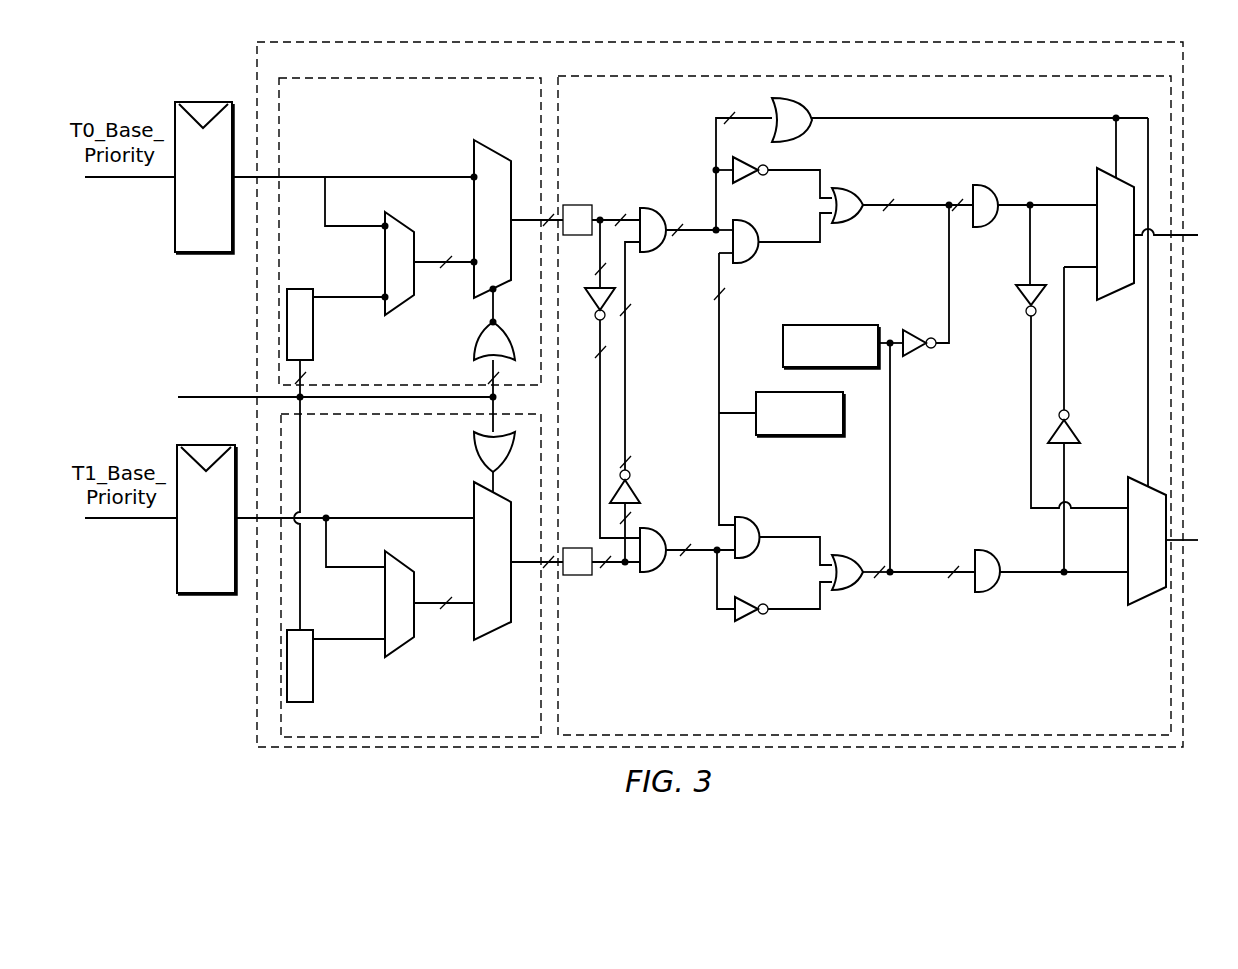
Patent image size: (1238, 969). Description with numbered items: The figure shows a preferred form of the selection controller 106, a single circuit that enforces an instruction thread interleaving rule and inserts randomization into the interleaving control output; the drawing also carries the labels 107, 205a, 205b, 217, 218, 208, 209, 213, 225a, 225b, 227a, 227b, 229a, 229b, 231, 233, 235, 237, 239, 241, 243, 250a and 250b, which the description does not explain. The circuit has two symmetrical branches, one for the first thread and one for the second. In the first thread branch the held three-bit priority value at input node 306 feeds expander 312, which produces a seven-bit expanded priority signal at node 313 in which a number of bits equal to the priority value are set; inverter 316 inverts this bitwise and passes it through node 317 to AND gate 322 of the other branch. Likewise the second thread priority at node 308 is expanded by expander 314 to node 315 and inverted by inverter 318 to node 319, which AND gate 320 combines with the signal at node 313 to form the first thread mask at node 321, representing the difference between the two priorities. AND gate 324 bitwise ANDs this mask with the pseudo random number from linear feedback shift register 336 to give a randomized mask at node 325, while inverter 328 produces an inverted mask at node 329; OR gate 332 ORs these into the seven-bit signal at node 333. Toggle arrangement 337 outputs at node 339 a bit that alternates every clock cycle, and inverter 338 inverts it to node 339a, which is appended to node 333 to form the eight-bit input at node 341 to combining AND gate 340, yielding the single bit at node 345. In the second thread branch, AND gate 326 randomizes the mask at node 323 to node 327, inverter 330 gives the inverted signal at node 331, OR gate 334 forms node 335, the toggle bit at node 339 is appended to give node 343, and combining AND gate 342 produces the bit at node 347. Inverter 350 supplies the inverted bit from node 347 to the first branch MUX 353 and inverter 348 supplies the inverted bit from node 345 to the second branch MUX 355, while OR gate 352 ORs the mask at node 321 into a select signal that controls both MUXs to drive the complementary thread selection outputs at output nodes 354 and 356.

The selection controller 106 is at (720, 394).
The priority selection logic 107 is at (864, 405).
The thread 0 priority circuit 205a is at (410, 231).
The thread 1 priority circuit 205b is at (411, 575).
The thread 0 base priority register 217 is at (159, 177).
The thread 1 base priority register 218 is at (160, 519).
The thread 0 base priority signal 208 is at (273, 181).
The thread 1 base priority signal 209 is at (272, 516).
The control signal 213 is at (232, 394).
The multiplexer 225a is at (395, 237).
The multiplexer 225b is at (395, 580).
The multiplexer 227a is at (492, 138).
The multiplexer 227b is at (492, 638).
The OR gate 229a is at (470, 345).
The OR gate 229b is at (470, 442).
The signal line 231 is at (382, 220).
The signal line 233 is at (382, 295).
The multiplexer output 235 is at (427, 258).
The multiplexer input 237 is at (472, 168).
The multiplexer input 239 is at (472, 265).
The select signal 241 is at (490, 322).
The select signal line 243 is at (498, 300).
The register 250a is at (315, 330).
The register 250b is at (315, 672).
The input node 306 is at (527, 215).
The node 308 is at (528, 558).
The expander 312 is at (577, 203).
The node 313 is at (600, 217).
The expander 314 is at (580, 546).
The node 315 is at (622, 575).
The inverter 316 is at (595, 302).
The node 317 is at (597, 392).
The inverter 318 is at (636, 482).
The node 319 is at (627, 410).
The AND gate 320 is at (650, 206).
The node 321 is at (710, 226).
The AND gate 322 is at (650, 527).
The node 323 is at (712, 558).
The AND gate 324 is at (752, 260).
The node 325 is at (812, 245).
The AND gate 326 is at (773, 502).
The node 327 is at (822, 545).
The inverter 328 is at (745, 162).
The node 329 is at (835, 188).
The inverter 330 is at (745, 620).
The node 331 is at (820, 612).
The OR gate 332 is at (850, 188).
The node 333 is at (915, 205).
The OR gate 334 is at (850, 555).
The node 335 is at (855, 585).
The linear feedback shift register 336 is at (797, 437).
The toggle arrangement 337 is at (825, 324).
The inverter 338 is at (915, 350).
The node 339 is at (892, 450).
The node 339a is at (950, 290).
The combining AND gate 340 is at (990, 182).
The node 341 is at (964, 212).
The combining AND gate 342 is at (998, 588).
The node 343 is at (968, 575).
The node 345 is at (1040, 203).
The node 347 is at (1040, 575).
The inverter 348 is at (1020, 300).
The inverter 350 is at (1075, 430).
The OR gate 352 is at (797, 100).
The first thread branch MUX 353 is at (1110, 165).
The output node 354 is at (1185, 235).
The second thread branch MUX 355 is at (1125, 480).
The output node 356 is at (1185, 540).